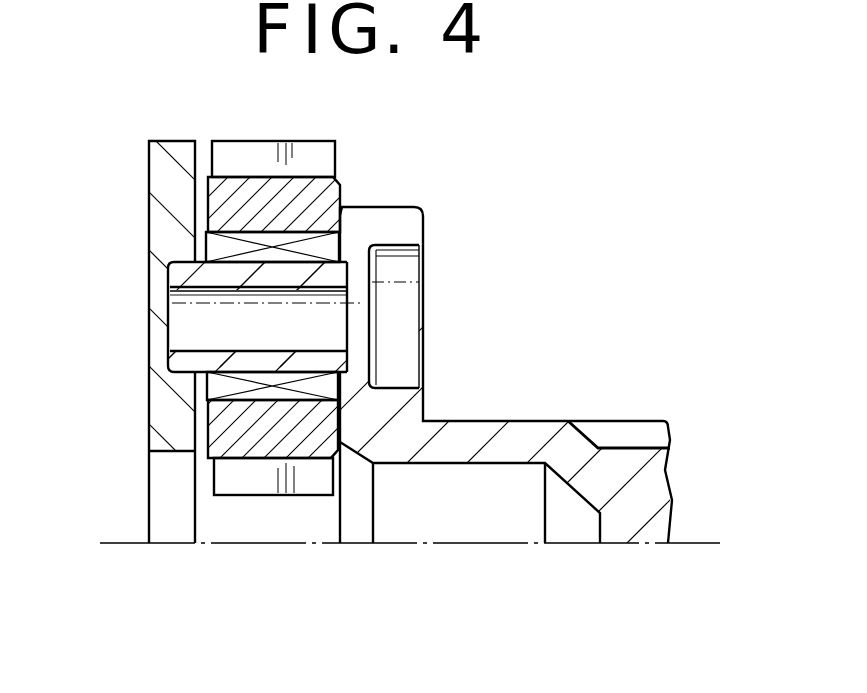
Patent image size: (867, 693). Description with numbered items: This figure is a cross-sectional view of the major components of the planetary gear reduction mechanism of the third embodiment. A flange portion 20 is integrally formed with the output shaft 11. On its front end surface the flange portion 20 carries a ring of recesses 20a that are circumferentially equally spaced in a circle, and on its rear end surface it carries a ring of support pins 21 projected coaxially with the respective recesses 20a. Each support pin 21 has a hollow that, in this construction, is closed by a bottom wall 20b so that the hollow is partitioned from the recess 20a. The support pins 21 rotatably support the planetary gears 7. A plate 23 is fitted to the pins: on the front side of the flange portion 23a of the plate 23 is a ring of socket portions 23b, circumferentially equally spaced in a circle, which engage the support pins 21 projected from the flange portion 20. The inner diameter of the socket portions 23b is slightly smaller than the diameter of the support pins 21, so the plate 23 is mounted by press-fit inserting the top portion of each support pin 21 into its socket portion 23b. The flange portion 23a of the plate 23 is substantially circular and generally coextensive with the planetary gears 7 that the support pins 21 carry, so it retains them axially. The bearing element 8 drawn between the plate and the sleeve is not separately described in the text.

The planetary gear 7 is at (266, 448).
The bearing 8 is at (218, 387).
The output shaft 11 is at (628, 510).
The flange portion 20 is at (528, 360).
The recess 20a is at (405, 268).
The bottom wall 20b is at (362, 306).
The support pin 21 is at (173, 295).
The plate 23 is at (173, 330).
The flange portion of the plate 23a is at (150, 227).
The socket portion 23b is at (172, 358).